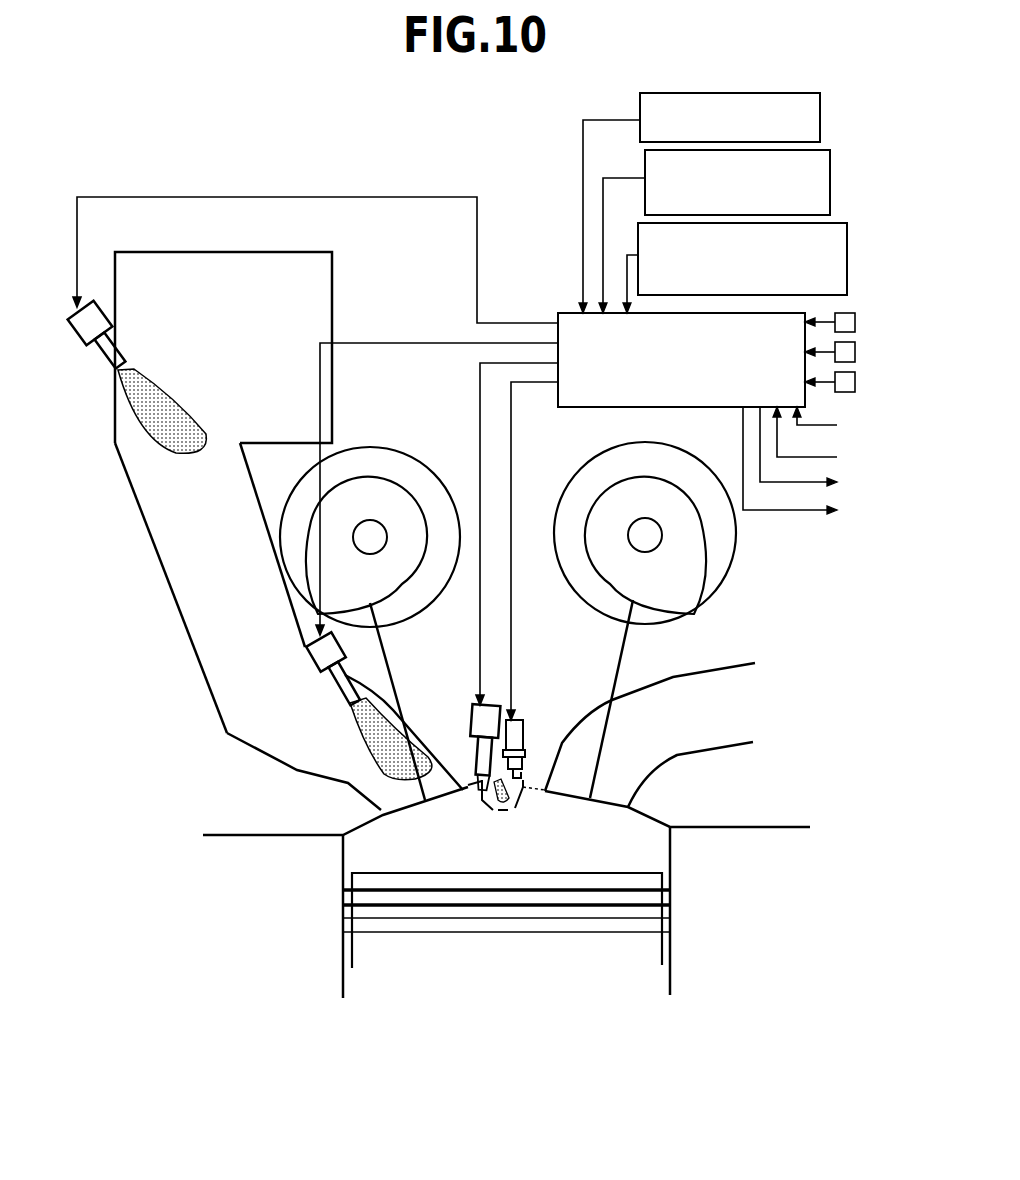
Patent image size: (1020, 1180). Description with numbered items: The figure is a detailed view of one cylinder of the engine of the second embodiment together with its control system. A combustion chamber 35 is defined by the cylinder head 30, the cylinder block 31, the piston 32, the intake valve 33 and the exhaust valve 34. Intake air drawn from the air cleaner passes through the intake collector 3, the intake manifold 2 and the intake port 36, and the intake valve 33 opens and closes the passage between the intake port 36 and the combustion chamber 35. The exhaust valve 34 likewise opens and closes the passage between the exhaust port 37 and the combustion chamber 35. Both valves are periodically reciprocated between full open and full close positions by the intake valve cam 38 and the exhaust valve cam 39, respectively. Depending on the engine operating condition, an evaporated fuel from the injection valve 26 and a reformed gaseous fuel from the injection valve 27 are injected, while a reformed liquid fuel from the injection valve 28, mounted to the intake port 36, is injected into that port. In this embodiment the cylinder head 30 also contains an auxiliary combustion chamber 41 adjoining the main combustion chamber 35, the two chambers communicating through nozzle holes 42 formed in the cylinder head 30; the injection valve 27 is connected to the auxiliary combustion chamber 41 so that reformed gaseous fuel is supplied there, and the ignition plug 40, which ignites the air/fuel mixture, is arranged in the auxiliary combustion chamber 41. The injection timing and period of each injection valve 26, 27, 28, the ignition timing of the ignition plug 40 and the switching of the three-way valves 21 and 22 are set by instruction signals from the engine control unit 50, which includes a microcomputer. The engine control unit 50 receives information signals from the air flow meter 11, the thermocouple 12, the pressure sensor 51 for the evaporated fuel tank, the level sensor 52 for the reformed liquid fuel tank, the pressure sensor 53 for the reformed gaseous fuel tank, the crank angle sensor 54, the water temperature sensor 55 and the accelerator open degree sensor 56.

The intake manifold 2 is at (180, 588).
The intake collector 3 is at (332, 288).
The air flow meter 11 is at (831, 423).
The thermocouple 12 is at (821, 438).
The three-way valve 21 is at (817, 452).
The three-way valve 22 is at (808, 467).
The injection valve 26 is at (86, 328).
The injection valve 27 is at (472, 712).
The injection valve 28 is at (320, 658).
The cylinder head 30 is at (227, 797).
The cylinder block 31 is at (238, 880).
The piston 32 is at (370, 948).
The intake valve 33 is at (381, 651).
The exhaust valve 34 is at (622, 653).
The combustion chamber 35 is at (650, 853).
The intake port 36 is at (302, 758).
The exhaust port 37 is at (677, 752).
The intake valve cam 38 is at (372, 503).
The exhaust valve cam 39 is at (690, 567).
The ignition plug 40 is at (521, 718).
The auxiliary combustion chamber 41 is at (522, 800).
The nozzle holes 42 is at (494, 812).
The engine control unit 50 is at (560, 410).
The pressure sensor 51 is at (855, 316).
The level sensor 52 is at (855, 348).
The pressure sensor 53 is at (855, 380).
The crank angle sensor 54 is at (820, 108).
The water temperature sensor 55 is at (830, 188).
The accelerator open degree sensor 56 is at (872, 240).